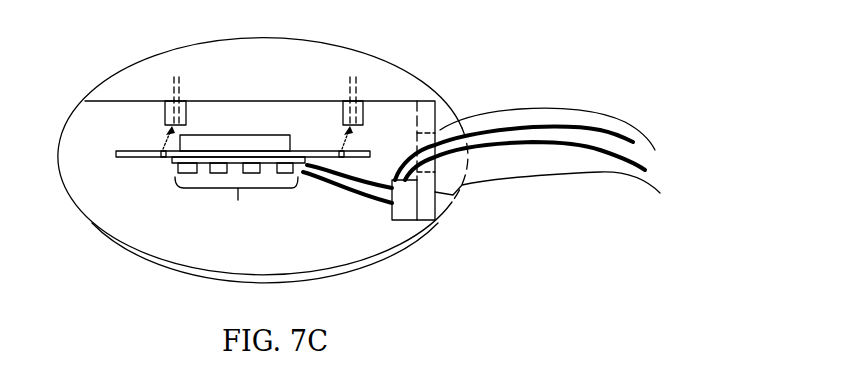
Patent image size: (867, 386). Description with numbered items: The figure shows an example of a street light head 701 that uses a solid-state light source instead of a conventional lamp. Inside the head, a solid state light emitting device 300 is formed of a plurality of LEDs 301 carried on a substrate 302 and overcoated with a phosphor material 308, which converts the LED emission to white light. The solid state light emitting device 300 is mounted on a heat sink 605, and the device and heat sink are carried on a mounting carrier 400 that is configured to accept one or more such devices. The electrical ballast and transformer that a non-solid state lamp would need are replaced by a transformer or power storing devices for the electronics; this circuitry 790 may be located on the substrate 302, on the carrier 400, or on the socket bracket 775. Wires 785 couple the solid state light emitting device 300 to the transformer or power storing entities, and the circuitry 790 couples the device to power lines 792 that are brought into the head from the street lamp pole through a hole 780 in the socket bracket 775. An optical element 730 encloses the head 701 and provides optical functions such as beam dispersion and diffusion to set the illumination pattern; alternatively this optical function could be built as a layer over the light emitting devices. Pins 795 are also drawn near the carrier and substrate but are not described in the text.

The solid state light emitting device 300 is at (265, 253).
The LEDs 301 is at (197, 236).
The substrate 302 is at (197, 236).
The phosphor material 308 is at (302, 180).
The carrier 400 is at (128, 159).
The heat sink 605 is at (163, 148).
The street light head 701 is at (127, 68).
The optical element 730 is at (433, 222).
The socket bracket 775 is at (462, 186).
The hole 780 is at (432, 143).
The wires 785 is at (372, 197).
The circuitry 790 is at (417, 203).
The power lines 792 is at (578, 152).
The alignment pins 795 is at (343, 112).